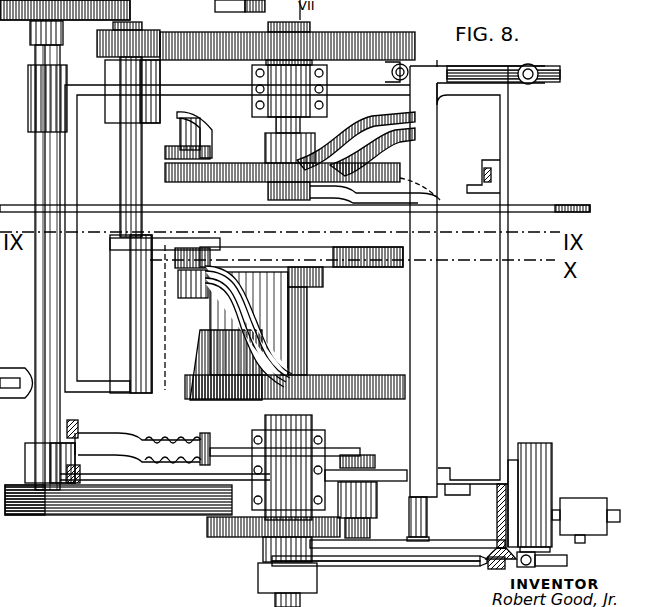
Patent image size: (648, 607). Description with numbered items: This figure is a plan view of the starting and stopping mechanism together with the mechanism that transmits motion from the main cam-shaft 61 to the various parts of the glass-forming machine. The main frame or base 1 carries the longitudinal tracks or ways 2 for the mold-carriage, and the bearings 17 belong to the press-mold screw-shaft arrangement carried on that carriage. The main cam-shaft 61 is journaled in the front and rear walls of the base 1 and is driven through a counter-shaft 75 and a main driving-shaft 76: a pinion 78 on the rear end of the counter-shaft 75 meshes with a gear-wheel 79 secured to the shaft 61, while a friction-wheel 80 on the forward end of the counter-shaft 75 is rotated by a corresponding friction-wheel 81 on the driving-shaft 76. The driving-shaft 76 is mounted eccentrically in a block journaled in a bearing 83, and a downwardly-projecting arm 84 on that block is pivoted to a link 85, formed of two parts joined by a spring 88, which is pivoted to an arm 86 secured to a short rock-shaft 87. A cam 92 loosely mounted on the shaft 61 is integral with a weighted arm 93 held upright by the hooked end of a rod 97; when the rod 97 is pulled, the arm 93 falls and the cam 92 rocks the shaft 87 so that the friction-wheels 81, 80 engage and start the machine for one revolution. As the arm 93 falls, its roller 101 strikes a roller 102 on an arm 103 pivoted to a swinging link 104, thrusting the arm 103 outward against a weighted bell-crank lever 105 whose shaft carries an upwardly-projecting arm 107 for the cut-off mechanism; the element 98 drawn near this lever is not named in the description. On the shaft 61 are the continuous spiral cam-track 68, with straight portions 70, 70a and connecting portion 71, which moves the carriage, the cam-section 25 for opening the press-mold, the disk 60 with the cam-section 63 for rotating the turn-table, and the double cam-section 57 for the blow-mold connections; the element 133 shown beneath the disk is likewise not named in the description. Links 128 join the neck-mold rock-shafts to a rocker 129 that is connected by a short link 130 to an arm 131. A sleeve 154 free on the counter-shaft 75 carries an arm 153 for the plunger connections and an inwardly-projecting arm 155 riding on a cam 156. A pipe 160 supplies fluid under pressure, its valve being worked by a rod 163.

The main frame or base 1 is at (477, 306).
The longitudinal tracks or ways 2 is at (423, 278).
The bearings 17 is at (18, 6).
The cam-section 25 is at (203, 380).
The cam-section 57 is at (340, 136).
The disk 60 is at (266, 140).
The main cam-shaft 61 is at (305, 360).
The cam-section 63 is at (190, 122).
The spiral cam-track 68 is at (265, 303).
The straight portion 70 is at (340, 382).
The straight portion 70a is at (194, 287).
The longitudinal connecting portion 71 is at (236, 360).
The counter-shaft 75 is at (140, 200).
The main driving-shaft 76 is at (33, 267).
The pinion 78 is at (148, 32).
The gear-wheel 79 is at (345, 33).
The friction-wheel 80 is at (155, 506).
The friction-wheel 81 is at (55, 507).
The bearing 83 is at (36, 471).
The downwardly-projecting arm 84 is at (40, 447).
The link 85 is at (225, 444).
The arm 86 is at (370, 465).
The rock-shaft 87 is at (376, 494).
The spring 88 is at (150, 443).
The cam 92 is at (225, 528).
The weighted arm 93 is at (307, 578).
The rod 97 is at (373, 561).
The foot 98 is at (494, 569).
The roller 101 is at (285, 548).
The roller 102 is at (392, 562).
The arm or lever 103 is at (467, 541).
The swinging link 104 is at (425, 535).
The weighted bell-crank lever 105 is at (586, 520).
The upwardly-projecting arm 107 is at (545, 454).
The links 128 is at (96, 199).
The rocker 129 is at (320, 201).
The short link 130 is at (349, 203).
The arm 131 is at (440, 195).
The gear 133 is at (250, 179).
The arm 153 is at (100, 378).
The sleeve 154 is at (122, 298).
The inwardly-projecting arm 155 is at (158, 242).
The cam 156 is at (245, 248).
The pipe 160 is at (526, 66).
The rod 163 is at (414, 66).